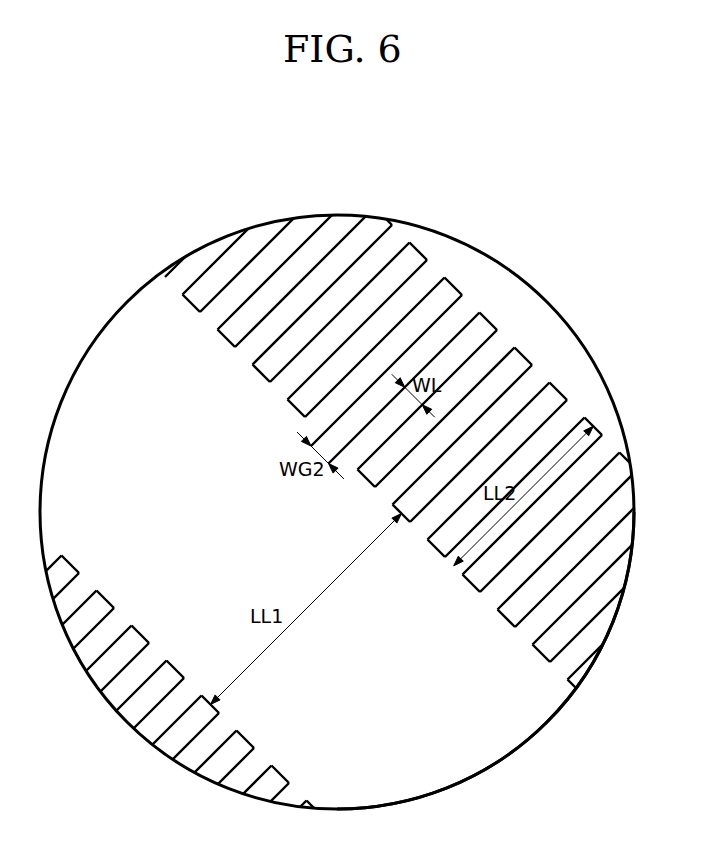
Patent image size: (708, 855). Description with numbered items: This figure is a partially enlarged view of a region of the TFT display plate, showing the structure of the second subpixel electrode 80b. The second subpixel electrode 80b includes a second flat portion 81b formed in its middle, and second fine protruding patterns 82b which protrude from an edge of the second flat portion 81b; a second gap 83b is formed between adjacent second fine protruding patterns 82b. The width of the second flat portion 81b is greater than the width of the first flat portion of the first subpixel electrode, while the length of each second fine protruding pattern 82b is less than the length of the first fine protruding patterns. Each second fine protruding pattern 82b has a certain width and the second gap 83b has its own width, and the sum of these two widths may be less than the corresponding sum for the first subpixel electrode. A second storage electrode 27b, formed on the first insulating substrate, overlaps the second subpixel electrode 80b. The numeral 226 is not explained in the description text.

The substrate 226 is at (526, 333).
The second storage electrode 27b is at (472, 745).
The second subpixel electrode 80b is at (436, 401).
The second flat portion 81b is at (214, 390).
The second fine protruding patterns 82b is at (315, 357).
The second gap 83b is at (363, 384).